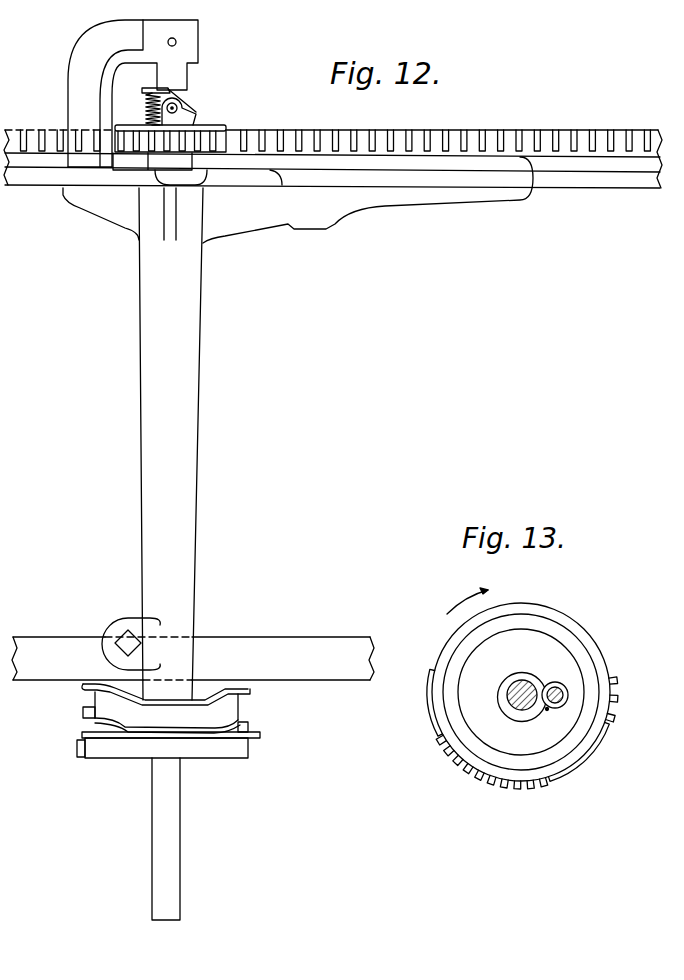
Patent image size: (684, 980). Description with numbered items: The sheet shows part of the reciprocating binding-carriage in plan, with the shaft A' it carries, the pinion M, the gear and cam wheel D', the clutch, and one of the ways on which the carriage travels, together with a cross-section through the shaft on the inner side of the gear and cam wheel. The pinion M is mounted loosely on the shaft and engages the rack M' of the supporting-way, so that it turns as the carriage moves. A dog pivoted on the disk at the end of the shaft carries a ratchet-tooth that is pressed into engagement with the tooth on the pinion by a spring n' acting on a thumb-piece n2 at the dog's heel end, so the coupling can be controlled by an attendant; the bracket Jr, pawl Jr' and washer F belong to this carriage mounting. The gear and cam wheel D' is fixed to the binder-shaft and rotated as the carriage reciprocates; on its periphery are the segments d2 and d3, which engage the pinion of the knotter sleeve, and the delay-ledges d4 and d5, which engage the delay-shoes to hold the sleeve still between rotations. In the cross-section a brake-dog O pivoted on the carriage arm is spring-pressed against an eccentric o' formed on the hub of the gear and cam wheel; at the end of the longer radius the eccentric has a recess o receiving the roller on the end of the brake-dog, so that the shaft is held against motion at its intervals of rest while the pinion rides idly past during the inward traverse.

In FIG. 12, the rack m' is at (333, 142).
In FIG. 12, the bracket Jr is at (117, 93).
In FIG. 12, the pawl Jr' is at (196, 103).
In FIG. 12, the spring n' is at (139, 107).
In FIG. 12, the thumb-piece n2 is at (157, 89).
In FIG. 12, the pinion M is at (215, 138).
In FIG. 12, the spring washer F is at (243, 707).
In FIG. 12, the segment d3 is at (78, 746).
In FIG. 13, the segment d3 is at (626, 699).
In FIG. 12, the delay-ledge d4 is at (240, 735).
In FIG. 13, the delay-ledge d4 is at (563, 612).
In FIG. 12, the gear and cam wheel D' is at (161, 766).
In FIG. 13, the gear and cam wheel D' is at (507, 692).
In FIG. 12, the shaft A' is at (166, 839).
In FIG. 13, the shaft A' is at (509, 697).
In FIG. 13, the brake-dog O is at (526, 675).
In FIG. 13, the recess o is at (540, 727).
In FIG. 13, the eccentric o' is at (558, 706).
In FIG. 13, the segment d2 is at (494, 778).
In FIG. 13, the delay-ledge d5 is at (589, 770).